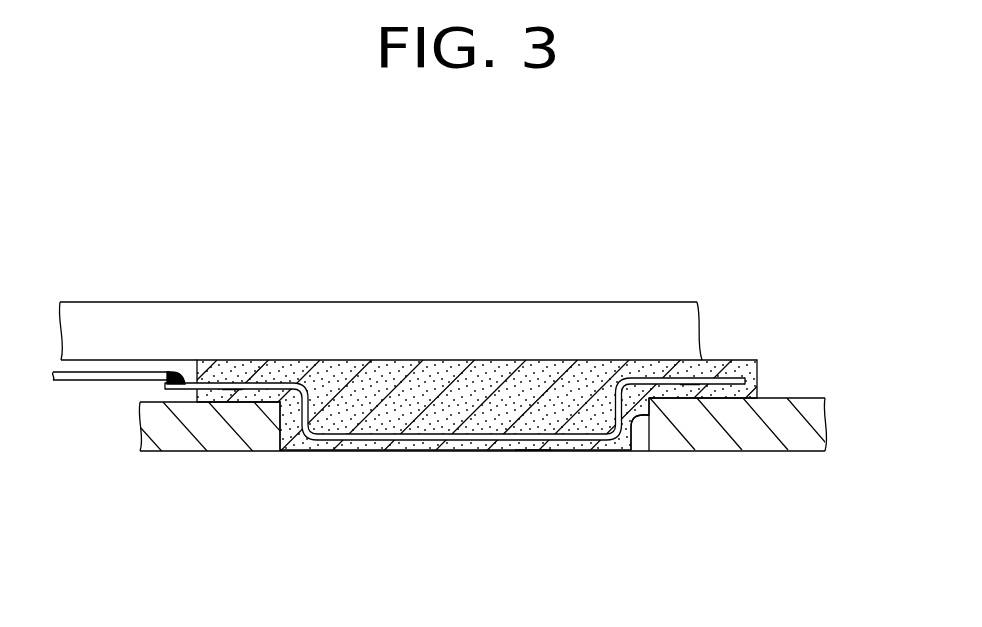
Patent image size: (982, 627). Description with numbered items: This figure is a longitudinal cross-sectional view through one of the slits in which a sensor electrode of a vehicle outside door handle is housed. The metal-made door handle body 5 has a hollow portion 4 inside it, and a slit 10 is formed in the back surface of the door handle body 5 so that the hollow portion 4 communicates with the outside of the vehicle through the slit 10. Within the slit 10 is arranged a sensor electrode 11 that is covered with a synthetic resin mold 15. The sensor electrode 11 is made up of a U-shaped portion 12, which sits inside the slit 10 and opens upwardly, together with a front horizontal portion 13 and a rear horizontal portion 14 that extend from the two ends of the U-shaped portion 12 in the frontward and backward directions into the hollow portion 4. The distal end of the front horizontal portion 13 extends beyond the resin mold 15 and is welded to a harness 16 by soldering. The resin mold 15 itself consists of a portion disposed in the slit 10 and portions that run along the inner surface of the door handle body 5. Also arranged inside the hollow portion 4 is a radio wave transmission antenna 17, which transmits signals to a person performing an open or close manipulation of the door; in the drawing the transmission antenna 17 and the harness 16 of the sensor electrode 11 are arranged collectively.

The hollow portion 4 is at (723, 337).
The door handle body 5 is at (760, 448).
The slit 10 is at (631, 448).
The sensor electrode 11 is at (533, 450).
The U-shaped portion 12 is at (450, 440).
The front horizontal portion 13 is at (232, 389).
The rear horizontal portion 14 is at (688, 384).
The resin mold 15 is at (490, 380).
The harness 16 is at (84, 381).
The radio wave transmission antenna 17 is at (285, 322).